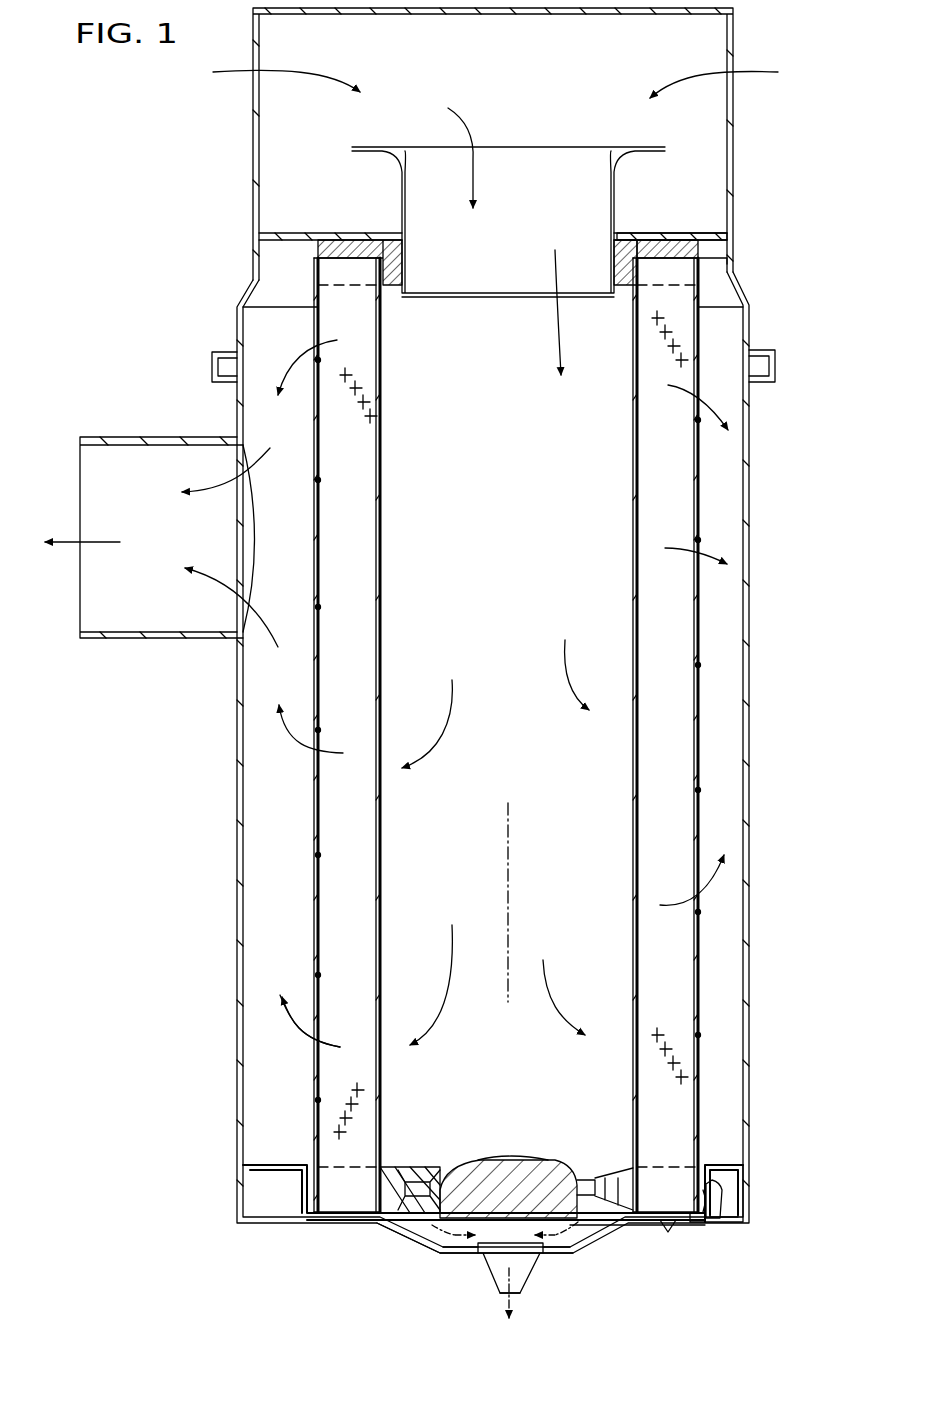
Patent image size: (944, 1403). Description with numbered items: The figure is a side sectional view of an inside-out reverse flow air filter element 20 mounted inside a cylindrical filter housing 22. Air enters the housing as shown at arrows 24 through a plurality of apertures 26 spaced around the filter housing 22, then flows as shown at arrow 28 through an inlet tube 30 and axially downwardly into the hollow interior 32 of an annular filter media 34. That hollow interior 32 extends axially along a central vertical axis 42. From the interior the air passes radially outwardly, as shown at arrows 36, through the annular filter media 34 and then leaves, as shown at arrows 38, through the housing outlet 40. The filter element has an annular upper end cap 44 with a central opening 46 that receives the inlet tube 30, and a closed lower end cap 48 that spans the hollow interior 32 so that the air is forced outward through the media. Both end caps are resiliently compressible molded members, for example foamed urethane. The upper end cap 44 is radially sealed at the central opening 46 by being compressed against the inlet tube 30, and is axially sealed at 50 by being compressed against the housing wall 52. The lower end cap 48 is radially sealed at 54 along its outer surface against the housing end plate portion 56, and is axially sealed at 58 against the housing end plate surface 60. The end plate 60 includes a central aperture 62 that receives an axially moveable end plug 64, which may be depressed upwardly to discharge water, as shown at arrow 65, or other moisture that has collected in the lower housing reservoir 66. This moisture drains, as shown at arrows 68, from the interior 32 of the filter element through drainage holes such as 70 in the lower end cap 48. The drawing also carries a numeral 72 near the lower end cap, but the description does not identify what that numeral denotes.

The inside-out reverse flow air filter element 20 is at (312, 327).
The filter housing 22 is at (253, 254).
The arrows 24 is at (237, 72).
The apertures 26 is at (253, 135).
The arrow 28 is at (473, 135).
The inlet tube 30 is at (404, 236).
The hollow interior 32 is at (518, 527).
The annular filter media 34 is at (378, 629).
The arrows 36 is at (287, 742).
The arrows 38 is at (222, 493).
The housing outlet 40 is at (140, 437).
The central vertical axis 42 is at (508, 900).
The annular upper end cap 44 is at (702, 248).
The central opening 46 is at (612, 277).
The closed lower end cap 48 is at (550, 1176).
The axial seal 50 is at (662, 248).
The housing wall 52 is at (628, 236).
The radial seal 54 is at (713, 1189).
The housing end plate portion 56 is at (706, 1184).
The axial seal 58 is at (676, 1226).
The housing end plate surface 60 is at (699, 1220).
The central aperture 62 is at (528, 1262).
The end plug 64 is at (521, 1283).
The arrow 65 is at (500, 1297).
The lower housing reservoir 66 is at (468, 1253).
The arrows 68 is at (432, 1248).
The drainage holes 70 is at (424, 1182).
The cap dome 72 is at (506, 1160).